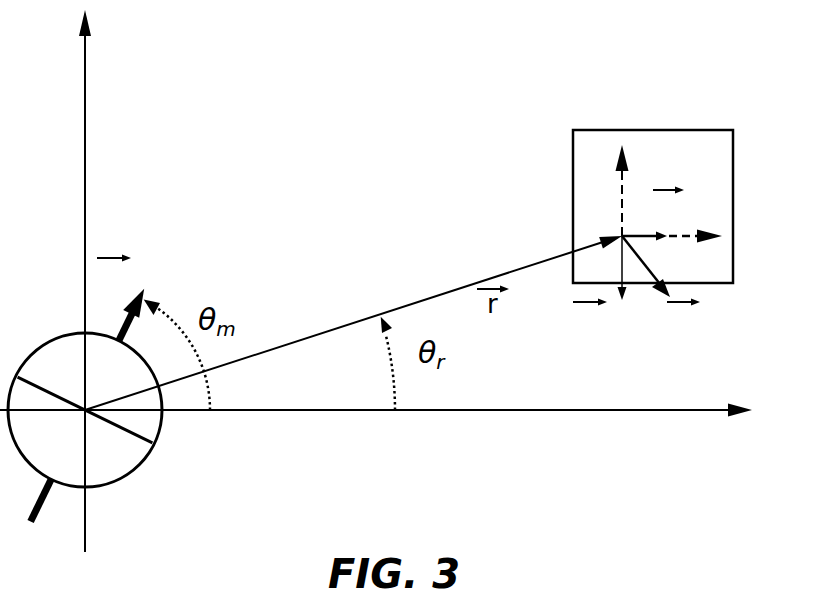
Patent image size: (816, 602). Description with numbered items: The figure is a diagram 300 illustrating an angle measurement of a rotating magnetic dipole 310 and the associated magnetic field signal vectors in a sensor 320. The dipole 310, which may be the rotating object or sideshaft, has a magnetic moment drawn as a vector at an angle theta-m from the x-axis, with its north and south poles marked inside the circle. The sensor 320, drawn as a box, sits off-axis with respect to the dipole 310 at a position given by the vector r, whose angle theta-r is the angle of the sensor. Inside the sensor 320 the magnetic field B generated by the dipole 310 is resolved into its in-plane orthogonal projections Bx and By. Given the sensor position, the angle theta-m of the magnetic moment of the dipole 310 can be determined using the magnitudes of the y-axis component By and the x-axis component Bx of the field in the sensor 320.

The diagram 300 is at (230, 38).
The dipole 310 is at (140, 468).
The sensor 320 is at (573, 145).